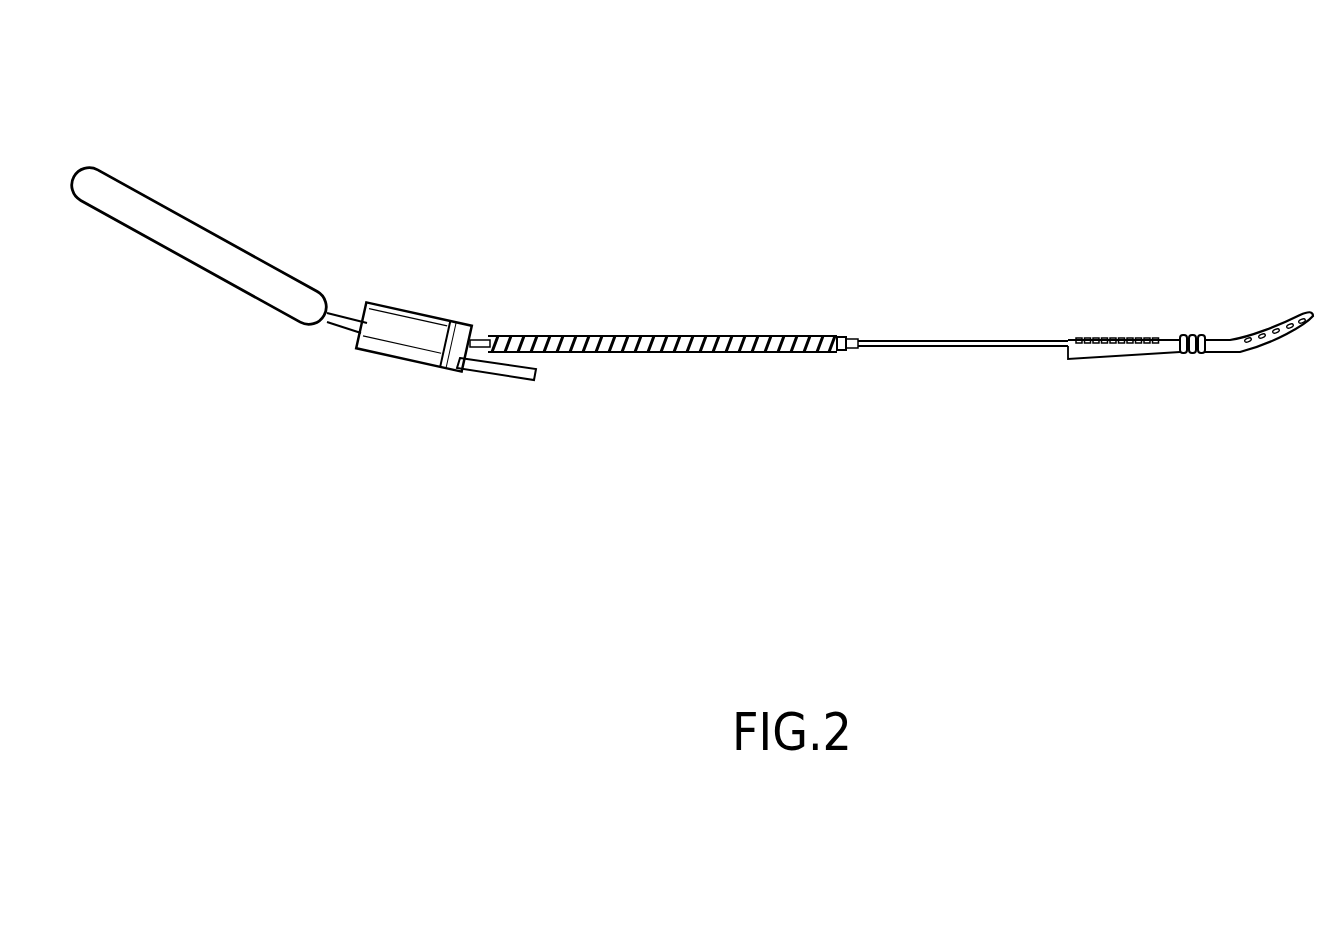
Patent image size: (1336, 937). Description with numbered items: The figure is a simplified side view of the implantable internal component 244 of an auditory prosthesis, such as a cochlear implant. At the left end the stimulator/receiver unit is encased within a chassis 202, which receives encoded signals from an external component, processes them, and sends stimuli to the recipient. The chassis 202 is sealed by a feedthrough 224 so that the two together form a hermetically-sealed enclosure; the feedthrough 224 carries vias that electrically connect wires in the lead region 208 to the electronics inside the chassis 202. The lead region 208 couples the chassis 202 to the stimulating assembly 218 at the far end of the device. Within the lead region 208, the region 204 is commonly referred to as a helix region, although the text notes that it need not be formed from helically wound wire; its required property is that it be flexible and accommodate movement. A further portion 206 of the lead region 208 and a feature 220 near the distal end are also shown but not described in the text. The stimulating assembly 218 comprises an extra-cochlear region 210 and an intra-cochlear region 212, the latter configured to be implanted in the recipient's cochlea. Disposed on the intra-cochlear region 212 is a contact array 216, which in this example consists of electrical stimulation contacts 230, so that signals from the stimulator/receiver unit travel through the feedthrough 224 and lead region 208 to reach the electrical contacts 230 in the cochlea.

The internal component 244 is at (488, 178).
The chassis 202 is at (378, 343).
The feedthrough 224 is at (463, 333).
The helix region 204 is at (832, 360).
The flexible shaft section 206 is at (840, 360).
The lead region 208 is at (492, 593).
The extra-cochlear region 210 is at (1077, 360).
The intra-cochlear region 212 is at (1318, 340).
The contact array 216 is at (1247, 275).
The stimulating assembly 218 is at (1082, 594).
The ring members 220 is at (1232, 343).
The electrical stimulation contacts 230 is at (1306, 312).